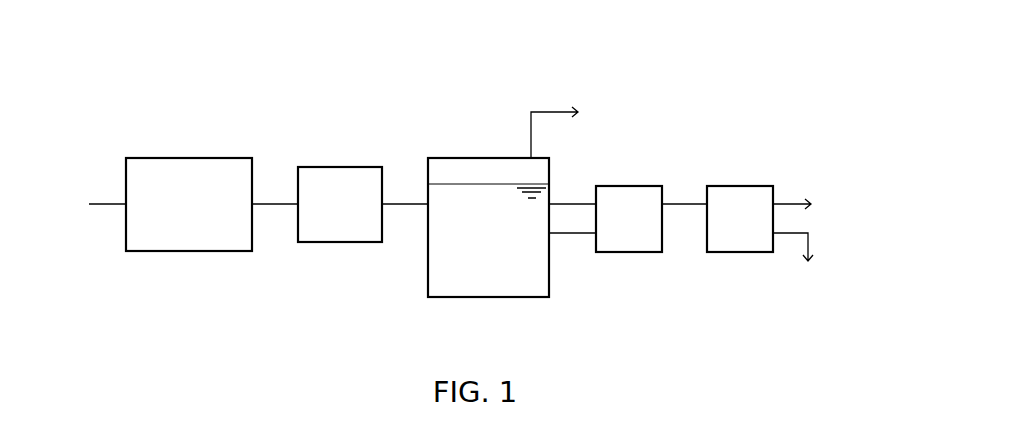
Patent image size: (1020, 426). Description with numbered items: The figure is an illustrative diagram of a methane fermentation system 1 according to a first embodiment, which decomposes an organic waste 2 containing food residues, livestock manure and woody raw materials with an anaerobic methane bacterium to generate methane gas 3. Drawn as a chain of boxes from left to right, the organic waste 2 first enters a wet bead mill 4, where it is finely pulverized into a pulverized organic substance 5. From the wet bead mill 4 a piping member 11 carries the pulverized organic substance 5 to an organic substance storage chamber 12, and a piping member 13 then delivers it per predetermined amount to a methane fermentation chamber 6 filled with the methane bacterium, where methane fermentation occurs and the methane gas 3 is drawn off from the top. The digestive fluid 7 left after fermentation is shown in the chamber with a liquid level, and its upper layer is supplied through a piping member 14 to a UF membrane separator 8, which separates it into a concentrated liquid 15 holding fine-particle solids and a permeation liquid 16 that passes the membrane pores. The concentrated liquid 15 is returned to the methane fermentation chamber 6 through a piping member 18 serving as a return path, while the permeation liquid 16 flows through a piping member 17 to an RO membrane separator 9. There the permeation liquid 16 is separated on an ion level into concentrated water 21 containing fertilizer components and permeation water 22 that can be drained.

The methane fermentation system 1 is at (668, 50).
The organic waste 2 is at (115, 198).
The methane gas 3 is at (554, 112).
The wet bead mill 4 is at (159, 158).
The pulverized organic substance 5 is at (280, 199).
The methane fermentation chamber 6 is at (470, 297).
The digestive fluid 7 is at (471, 197).
The UF membrane separator 8 is at (633, 252).
The RO membrane separator 9 is at (727, 252).
The piping member 11 is at (275, 212).
The organic substance storage chamber 12 is at (337, 167).
The piping member 13 is at (402, 212).
The piping member 14 is at (553, 200).
The concentrated liquid 15 is at (586, 243).
The permeation liquid 16 is at (671, 195).
The piping member 17 is at (685, 212).
The piping member 18 is at (586, 234).
The concentrated water 21 is at (789, 200).
The permeation water 22 is at (789, 237).